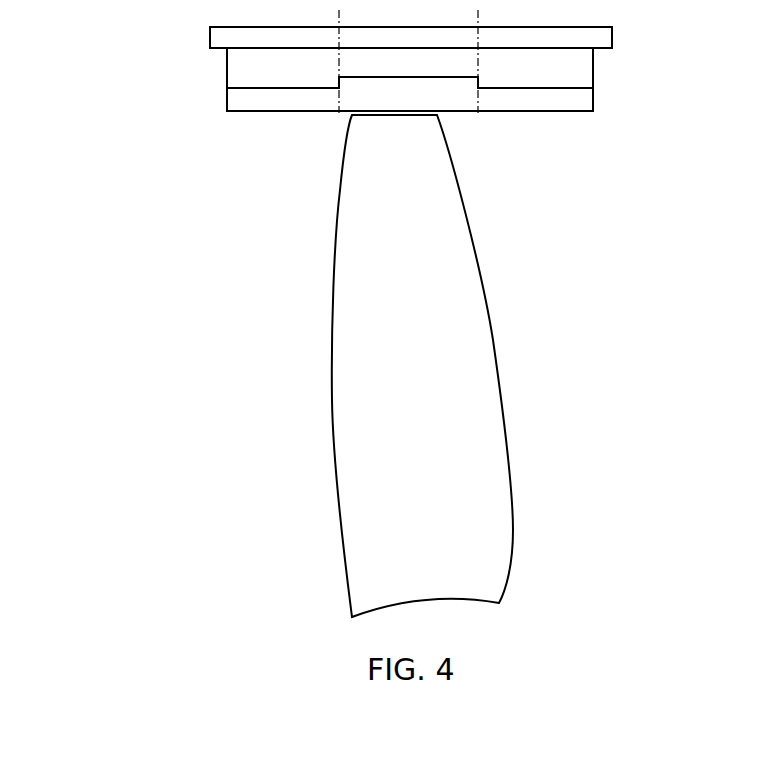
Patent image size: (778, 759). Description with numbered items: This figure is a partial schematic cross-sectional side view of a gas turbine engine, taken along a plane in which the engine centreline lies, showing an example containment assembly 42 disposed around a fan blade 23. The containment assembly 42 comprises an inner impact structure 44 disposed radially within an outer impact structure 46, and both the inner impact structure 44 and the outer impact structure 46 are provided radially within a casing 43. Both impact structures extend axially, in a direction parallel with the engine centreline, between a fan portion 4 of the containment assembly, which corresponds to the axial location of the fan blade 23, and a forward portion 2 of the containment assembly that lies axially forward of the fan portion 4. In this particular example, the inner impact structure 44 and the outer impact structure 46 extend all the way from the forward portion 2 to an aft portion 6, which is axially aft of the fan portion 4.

The forward portion 2 is at (262, 3).
The fan portion 4 is at (394, 3).
The aft portion 6 is at (548, 3).
The fan blade 23 is at (355, 272).
The containment assembly 42 is at (364, 100).
The casing 43 is at (602, 33).
The inner impact structure 44 is at (283, 103).
The outer impact structure 46 is at (580, 62).